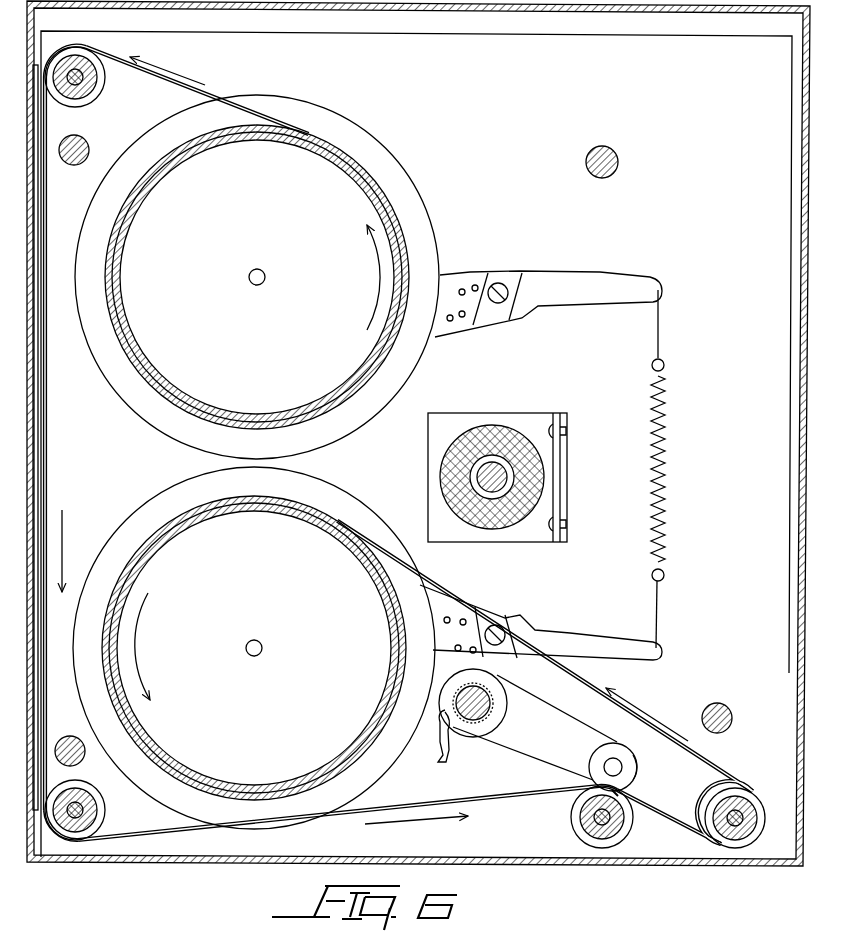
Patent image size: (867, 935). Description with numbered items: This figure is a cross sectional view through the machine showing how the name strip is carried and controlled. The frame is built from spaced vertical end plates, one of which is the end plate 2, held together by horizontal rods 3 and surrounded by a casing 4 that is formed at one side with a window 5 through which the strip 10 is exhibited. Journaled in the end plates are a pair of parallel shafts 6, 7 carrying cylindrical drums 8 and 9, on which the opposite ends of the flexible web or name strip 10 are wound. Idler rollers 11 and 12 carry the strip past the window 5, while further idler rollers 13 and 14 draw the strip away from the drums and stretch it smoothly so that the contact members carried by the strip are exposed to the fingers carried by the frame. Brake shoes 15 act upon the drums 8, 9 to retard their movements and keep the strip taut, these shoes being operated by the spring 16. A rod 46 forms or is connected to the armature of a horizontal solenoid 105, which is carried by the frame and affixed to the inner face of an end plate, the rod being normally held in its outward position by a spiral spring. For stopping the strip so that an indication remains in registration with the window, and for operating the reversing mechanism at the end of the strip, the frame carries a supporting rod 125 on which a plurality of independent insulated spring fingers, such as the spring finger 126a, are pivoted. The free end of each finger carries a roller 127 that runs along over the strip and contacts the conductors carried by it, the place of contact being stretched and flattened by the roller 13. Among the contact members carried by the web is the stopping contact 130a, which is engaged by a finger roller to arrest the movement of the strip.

The end plate 2 is at (418, 433).
The horizontal rods 3 is at (84, 143).
The casing 4 is at (481, 12).
The window 5 is at (47, 380).
The shaft 6 is at (272, 265).
The shaft 7 is at (260, 643).
The cylindrical drum 8 is at (293, 142).
The cylindrical drum 9 is at (312, 521).
The name strip 10 is at (50, 470).
The idler roller 11 is at (90, 82).
The idler roller 12 is at (88, 804).
The idler roller 13 is at (620, 827).
The idler roller 14 is at (750, 803).
The brake shoes 15 is at (480, 283).
The spring 16 is at (664, 457).
The rod 46 is at (488, 476).
The horizontal solenoid 105 is at (505, 427).
The supporting rod 125 is at (482, 722).
The spring finger 126a is at (537, 718).
The roller 127 is at (646, 760).
The stopping contact 130a is at (620, 795).